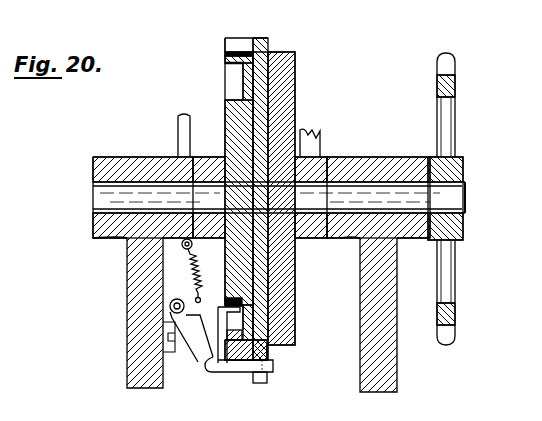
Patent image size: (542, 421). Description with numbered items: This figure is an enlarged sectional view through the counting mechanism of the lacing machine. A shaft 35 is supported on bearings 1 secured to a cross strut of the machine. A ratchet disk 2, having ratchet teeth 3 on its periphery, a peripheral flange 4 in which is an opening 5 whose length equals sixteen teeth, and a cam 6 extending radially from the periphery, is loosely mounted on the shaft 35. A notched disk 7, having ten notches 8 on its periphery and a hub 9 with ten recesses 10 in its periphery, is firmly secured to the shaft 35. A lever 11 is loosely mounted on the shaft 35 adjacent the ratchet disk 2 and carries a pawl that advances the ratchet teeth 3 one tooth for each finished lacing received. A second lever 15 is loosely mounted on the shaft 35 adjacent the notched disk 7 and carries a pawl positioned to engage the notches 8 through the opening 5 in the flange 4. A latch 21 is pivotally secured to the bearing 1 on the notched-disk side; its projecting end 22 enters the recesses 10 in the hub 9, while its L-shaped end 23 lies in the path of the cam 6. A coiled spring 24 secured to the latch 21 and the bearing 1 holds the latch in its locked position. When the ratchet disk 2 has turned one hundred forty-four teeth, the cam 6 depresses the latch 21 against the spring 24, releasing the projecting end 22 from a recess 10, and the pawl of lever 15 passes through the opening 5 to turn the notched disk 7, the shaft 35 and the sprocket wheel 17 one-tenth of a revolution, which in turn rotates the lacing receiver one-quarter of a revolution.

The bearing 1 is at (118, 164).
The ratchet disk 2 is at (297, 112).
The ratchet teeth 3 is at (285, 52).
The peripheral flange 4 is at (245, 358).
The opening 5 is at (240, 44).
The cam 6 is at (261, 384).
The notched disk 7 is at (228, 116).
The notches 8 is at (228, 54).
The hub 9 is at (190, 140).
The recesses 10 is at (237, 88).
The lever 11 is at (320, 160).
The lever 15 is at (203, 170).
The sprocket wheel 17 is at (448, 128).
The latch 21 is at (210, 358).
The projecting end 22 is at (242, 302).
The L-shaped end 23 is at (275, 368).
The coiled spring 24 is at (192, 271).
The shaft 35 is at (100, 197).